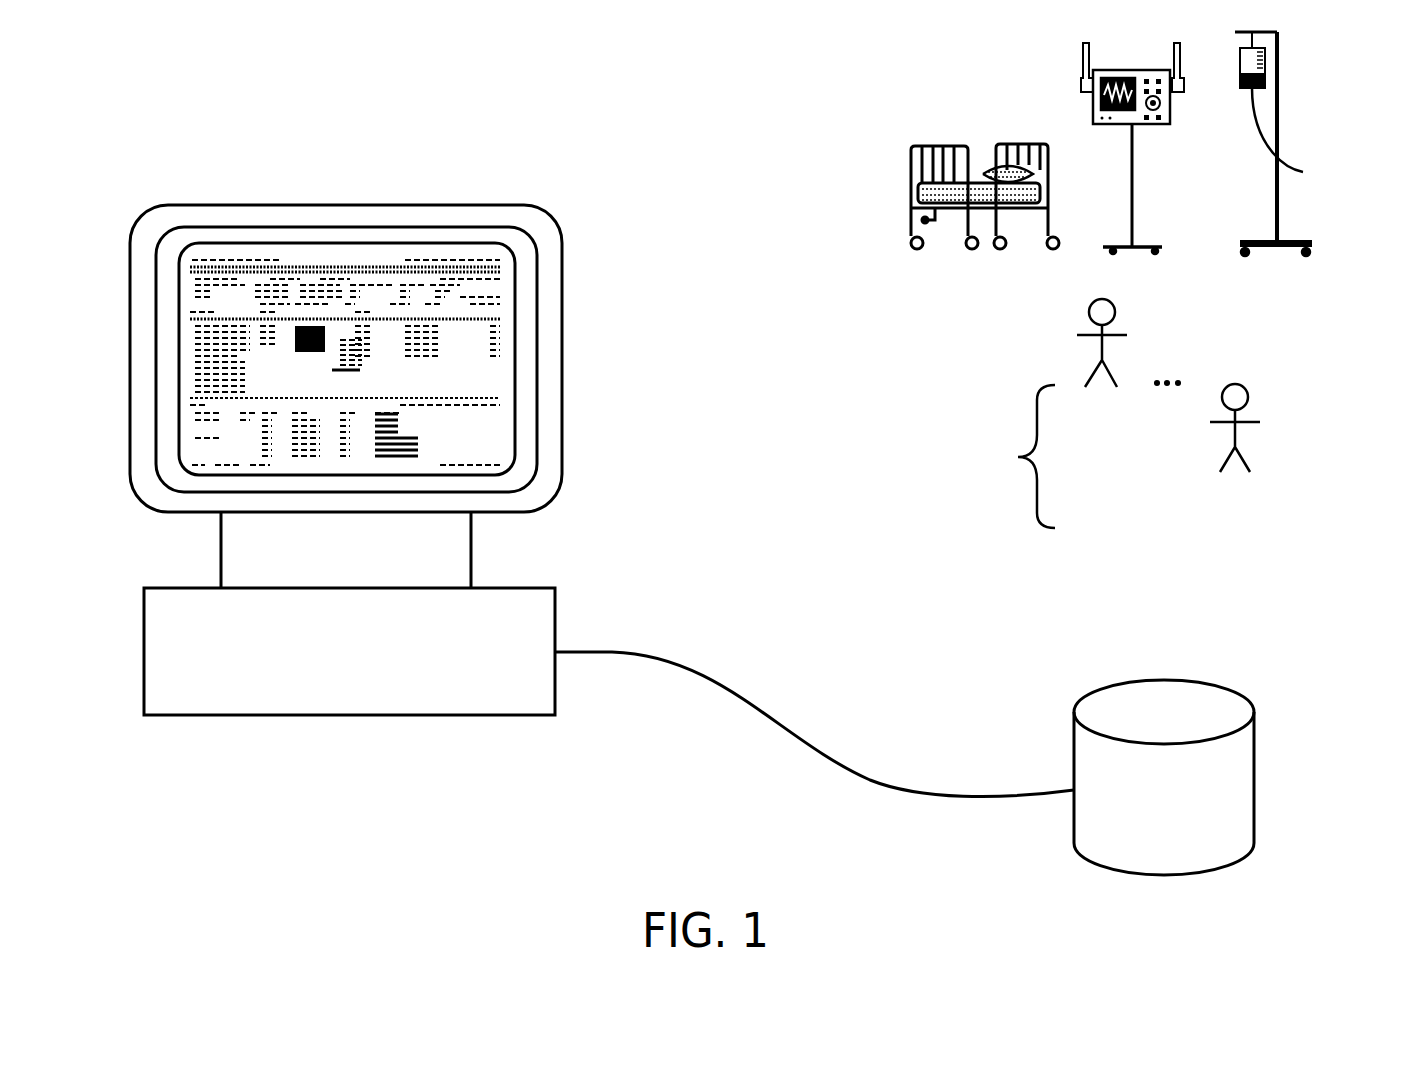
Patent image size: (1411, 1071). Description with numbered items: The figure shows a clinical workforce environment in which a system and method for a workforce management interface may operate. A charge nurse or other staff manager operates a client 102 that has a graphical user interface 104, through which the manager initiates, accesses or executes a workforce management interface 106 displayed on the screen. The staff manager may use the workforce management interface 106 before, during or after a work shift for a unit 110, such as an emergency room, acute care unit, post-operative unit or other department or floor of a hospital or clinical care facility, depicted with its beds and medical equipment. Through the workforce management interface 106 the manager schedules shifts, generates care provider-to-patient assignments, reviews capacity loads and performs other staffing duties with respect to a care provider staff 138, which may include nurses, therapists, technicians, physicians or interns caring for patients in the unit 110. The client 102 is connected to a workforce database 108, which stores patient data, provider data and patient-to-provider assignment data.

The client 102 is at (523, 587).
The graphical user interface 104 is at (528, 387).
The workforce management interface 106 is at (347, 359).
The workforce database 108 is at (1253, 745).
The unit 110 is at (1292, 77).
The care provider staff 138 is at (1020, 450).